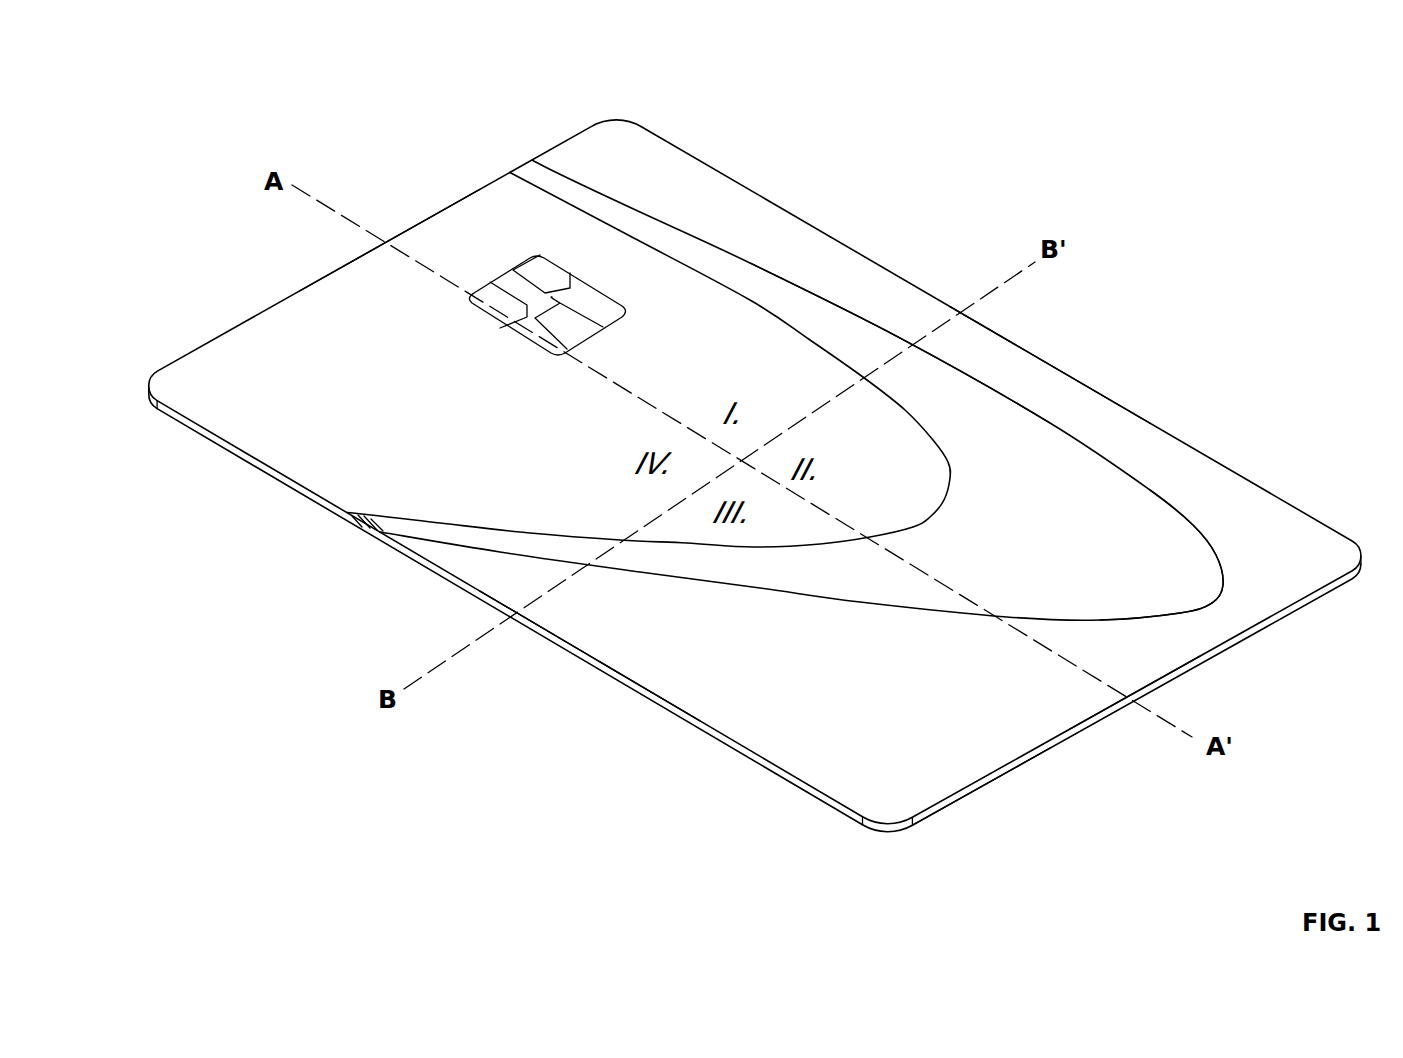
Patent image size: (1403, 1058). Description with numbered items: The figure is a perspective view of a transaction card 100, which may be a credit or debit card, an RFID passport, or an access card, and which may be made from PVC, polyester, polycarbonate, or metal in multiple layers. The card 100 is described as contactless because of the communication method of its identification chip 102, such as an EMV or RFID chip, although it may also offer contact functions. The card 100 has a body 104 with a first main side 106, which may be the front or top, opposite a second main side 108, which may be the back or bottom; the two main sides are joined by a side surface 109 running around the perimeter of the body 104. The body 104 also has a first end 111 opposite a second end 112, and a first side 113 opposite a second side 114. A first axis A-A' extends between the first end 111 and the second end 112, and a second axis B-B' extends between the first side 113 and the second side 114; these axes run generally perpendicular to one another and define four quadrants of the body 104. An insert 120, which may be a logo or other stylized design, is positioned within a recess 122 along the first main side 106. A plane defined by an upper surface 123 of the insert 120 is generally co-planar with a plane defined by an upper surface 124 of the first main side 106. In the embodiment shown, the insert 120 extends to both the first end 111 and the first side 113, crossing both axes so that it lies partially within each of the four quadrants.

The transaction card 100 is at (212, 54).
The identification chip 102 is at (506, 272).
The body 104 is at (677, 193).
The first main side 106 is at (1172, 458).
The second main side 108 is at (970, 797).
The side surface 109 is at (647, 692).
The first end 111 is at (433, 203).
The second end 112 is at (1113, 712).
The first side 113 is at (542, 644).
The second side 114 is at (1064, 367).
The insert 120 is at (1170, 560).
The recess 122 is at (878, 323).
The upper surface of the insert 123 is at (1066, 488).
The upper surface of the first main side 124 is at (229, 374).